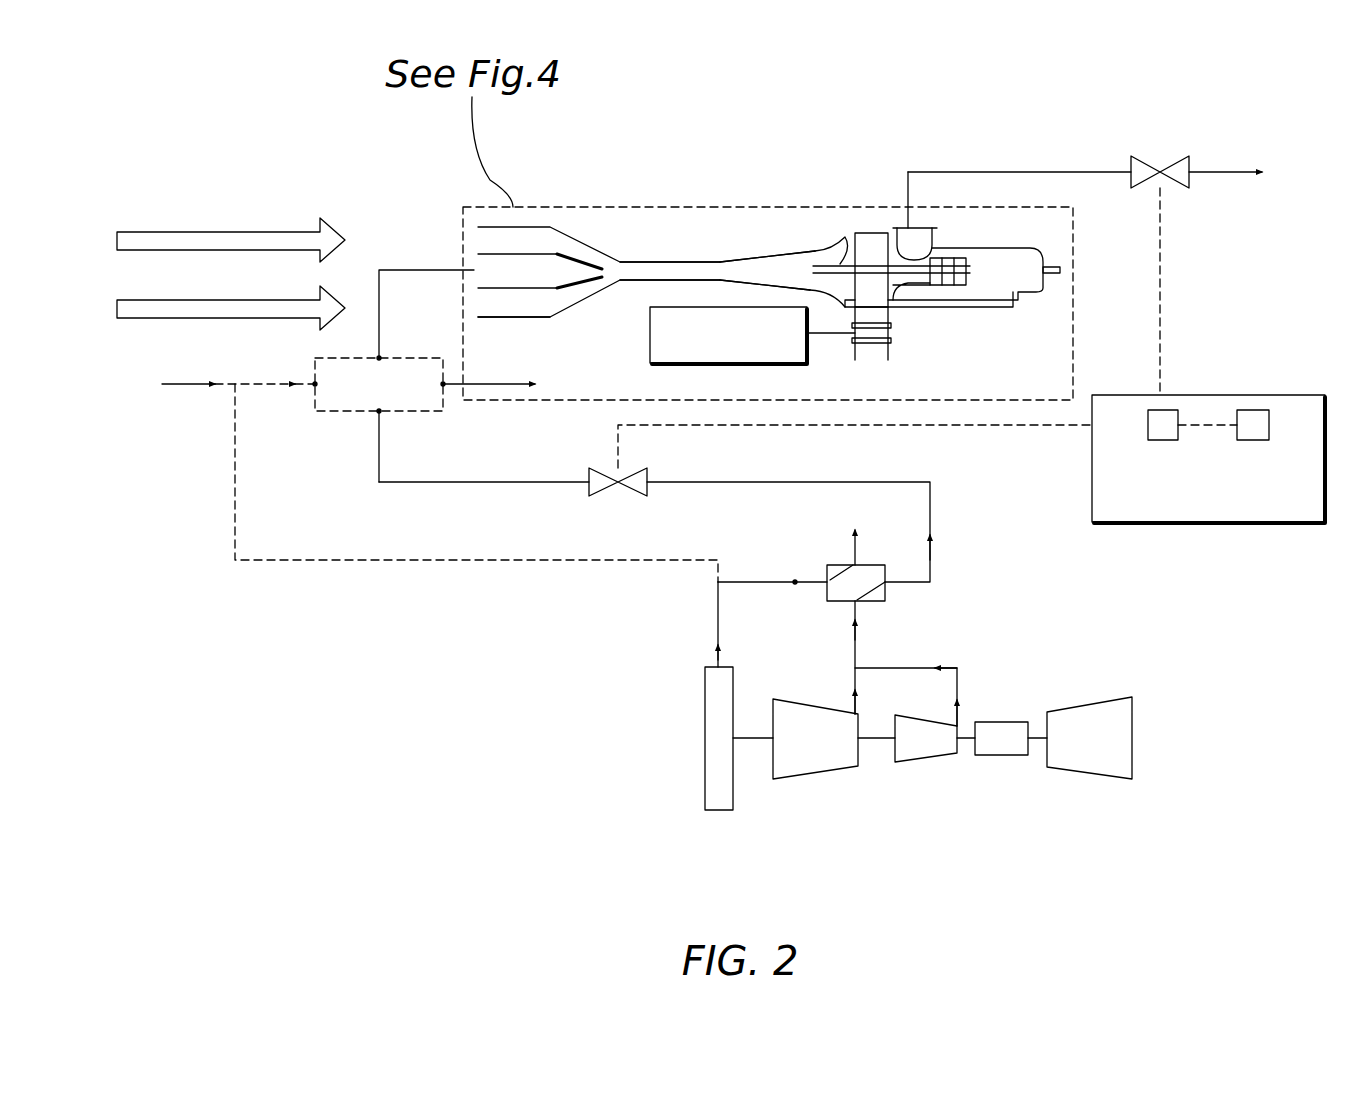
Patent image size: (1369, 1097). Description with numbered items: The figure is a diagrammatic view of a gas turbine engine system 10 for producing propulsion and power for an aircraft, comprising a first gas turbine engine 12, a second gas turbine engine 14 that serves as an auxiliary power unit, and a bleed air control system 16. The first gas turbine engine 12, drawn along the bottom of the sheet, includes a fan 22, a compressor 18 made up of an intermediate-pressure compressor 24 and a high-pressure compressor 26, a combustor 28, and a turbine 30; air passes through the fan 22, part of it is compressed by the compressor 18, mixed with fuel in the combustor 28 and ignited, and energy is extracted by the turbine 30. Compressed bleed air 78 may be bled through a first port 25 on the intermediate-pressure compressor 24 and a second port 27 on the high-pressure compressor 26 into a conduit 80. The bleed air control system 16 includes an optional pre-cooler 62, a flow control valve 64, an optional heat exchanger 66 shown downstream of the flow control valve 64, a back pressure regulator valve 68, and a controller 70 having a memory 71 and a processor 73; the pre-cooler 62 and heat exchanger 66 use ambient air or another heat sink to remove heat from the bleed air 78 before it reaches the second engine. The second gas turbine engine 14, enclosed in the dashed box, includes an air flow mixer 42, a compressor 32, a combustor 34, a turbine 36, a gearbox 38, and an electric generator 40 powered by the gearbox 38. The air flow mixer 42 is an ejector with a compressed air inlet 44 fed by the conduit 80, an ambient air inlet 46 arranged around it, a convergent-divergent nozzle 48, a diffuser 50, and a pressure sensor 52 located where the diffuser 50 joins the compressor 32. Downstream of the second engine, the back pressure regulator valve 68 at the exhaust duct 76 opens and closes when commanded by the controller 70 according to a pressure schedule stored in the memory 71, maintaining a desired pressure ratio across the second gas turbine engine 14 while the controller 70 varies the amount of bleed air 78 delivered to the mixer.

The gas turbine engine system 10 is at (200, 175).
The first gas turbine engine 12 is at (680, 748).
The second gas turbine engine 14 is at (822, 207).
The bleed air control system 16 is at (187, 510).
The compressor 18 is at (875, 828).
The fan 22 is at (718, 812).
The intermediate-pressure compressor 24 is at (813, 778).
The first port 25 is at (850, 705).
The high-pressure compressor 26 is at (933, 760).
The second port 27 is at (965, 722).
The combustor 28 is at (1010, 755).
The turbine 30 is at (1097, 778).
The compressor 32 is at (836, 245).
The combustor 34 is at (1080, 272).
The turbine 36 is at (945, 243).
The gearbox 38 is at (898, 347).
The electric generator 40 is at (755, 365).
The air flow mixer 42 is at (520, 225).
The compressed air inlet 44 is at (508, 252).
The ambient air inlet 46 is at (517, 317).
The convergent-divergent nozzle 48 is at (558, 253).
The diffuser 50 is at (720, 260).
The pressure sensor 52 is at (838, 255).
The pre-cooler 62 is at (827, 565).
The flow control valve 64 is at (615, 500).
The heat exchanger 66 is at (340, 400).
The back pressure regulator valve 68 is at (1160, 157).
The controller 70 is at (1292, 393).
The memory 71 is at (1250, 410).
The processor 73 is at (1162, 410).
The exhaust duct 76 is at (918, 225).
The compressed bleed air 78 is at (935, 515).
The conduit 80 is at (498, 485).